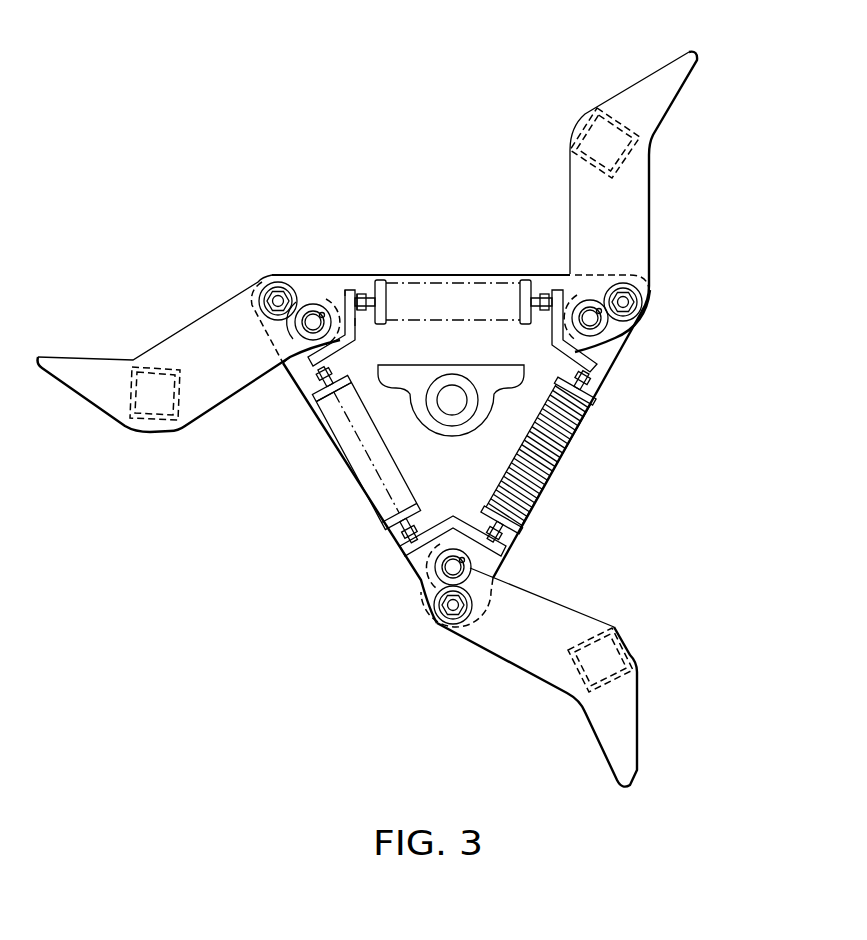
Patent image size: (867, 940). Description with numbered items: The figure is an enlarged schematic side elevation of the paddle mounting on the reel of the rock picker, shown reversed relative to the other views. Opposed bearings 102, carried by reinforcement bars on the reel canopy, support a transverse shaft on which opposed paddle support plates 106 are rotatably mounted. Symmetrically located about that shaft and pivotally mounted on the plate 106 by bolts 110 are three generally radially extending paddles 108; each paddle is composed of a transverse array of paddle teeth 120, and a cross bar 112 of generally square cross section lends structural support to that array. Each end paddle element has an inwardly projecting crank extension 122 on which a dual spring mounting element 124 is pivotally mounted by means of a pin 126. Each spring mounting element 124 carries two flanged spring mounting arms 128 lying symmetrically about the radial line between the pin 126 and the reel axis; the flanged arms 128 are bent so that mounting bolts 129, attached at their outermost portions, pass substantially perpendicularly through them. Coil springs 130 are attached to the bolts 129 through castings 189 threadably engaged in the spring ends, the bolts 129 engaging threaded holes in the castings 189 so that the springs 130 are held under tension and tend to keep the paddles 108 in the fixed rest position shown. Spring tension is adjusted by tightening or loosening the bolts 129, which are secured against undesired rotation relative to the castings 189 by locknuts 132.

The bearing 102 is at (465, 440).
The paddle support plate 106 is at (326, 398).
The paddle 108 is at (633, 213).
The bolt 110 is at (270, 298).
The cross bar 112 is at (590, 124).
The paddle teeth 120 is at (44, 372).
The crank extension 122 is at (312, 300).
The dual spring mounting element 124 is at (360, 322).
The pin 126 is at (308, 283).
The spring mounting arm 128 is at (352, 287).
The mounting bolt 129 is at (344, 293).
The coil spring 130 is at (453, 287).
The locknut 132 is at (537, 300).
The casting 189 is at (368, 288).